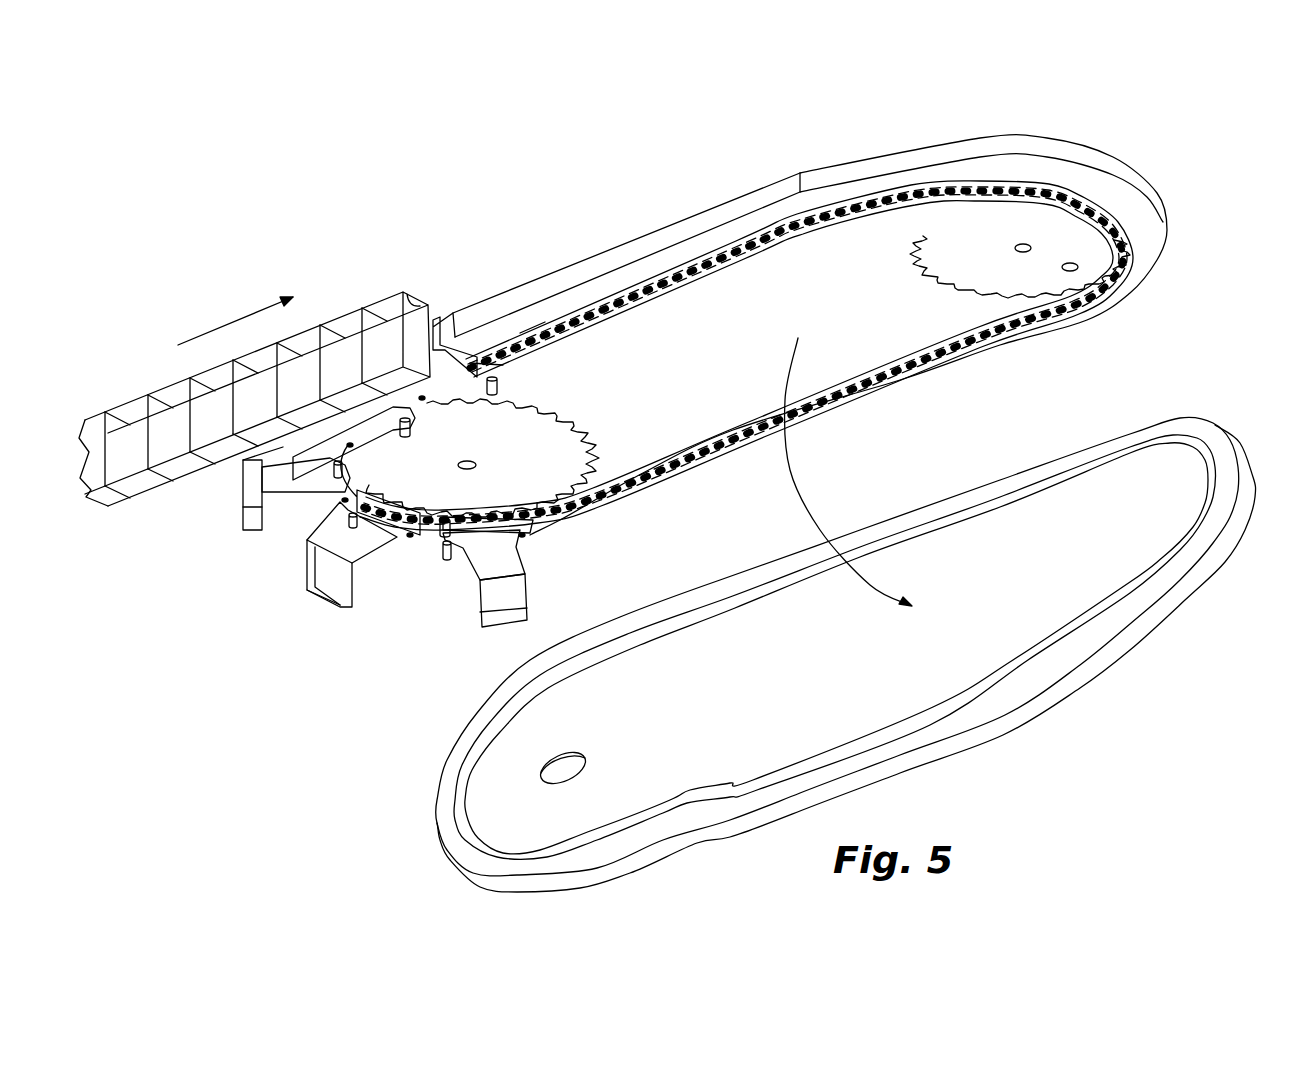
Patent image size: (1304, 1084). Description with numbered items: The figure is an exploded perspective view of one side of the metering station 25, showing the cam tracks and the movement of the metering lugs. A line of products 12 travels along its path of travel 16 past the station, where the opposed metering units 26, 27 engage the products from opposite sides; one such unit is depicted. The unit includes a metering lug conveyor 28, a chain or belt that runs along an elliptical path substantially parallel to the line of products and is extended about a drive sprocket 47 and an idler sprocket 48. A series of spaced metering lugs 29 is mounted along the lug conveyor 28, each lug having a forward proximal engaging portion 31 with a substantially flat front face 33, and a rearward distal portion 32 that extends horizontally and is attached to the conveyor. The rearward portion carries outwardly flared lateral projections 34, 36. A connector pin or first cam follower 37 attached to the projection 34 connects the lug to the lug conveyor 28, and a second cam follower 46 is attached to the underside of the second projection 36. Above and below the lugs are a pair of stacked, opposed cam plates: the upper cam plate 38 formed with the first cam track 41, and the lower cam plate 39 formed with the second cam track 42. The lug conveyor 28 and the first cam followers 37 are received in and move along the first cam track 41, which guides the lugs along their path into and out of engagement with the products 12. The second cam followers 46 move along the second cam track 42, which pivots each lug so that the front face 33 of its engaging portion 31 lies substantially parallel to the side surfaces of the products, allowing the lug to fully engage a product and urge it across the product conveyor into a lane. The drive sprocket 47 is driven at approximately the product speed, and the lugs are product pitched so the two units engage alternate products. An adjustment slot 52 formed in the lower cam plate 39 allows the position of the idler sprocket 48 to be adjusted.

The products 12 is at (337, 330).
The path of travel 16 is at (235, 320).
The metering station 25 is at (563, 237).
The metering unit 26 is at (780, 146).
The metering unit 27 is at (780, 176).
The metering lug conveyor 28 is at (740, 248).
The metering lug 29 is at (397, 544).
The forward proximal engaging portion 31 is at (252, 493).
The rearward distal portion 32 is at (297, 482).
The front face 33 is at (237, 492).
The projection 34 is at (413, 513).
The second projection 36 is at (367, 497).
The first cam follower 37 is at (425, 400).
The upper cam plate 38 is at (648, 367).
The lower cam plate 39 is at (790, 690).
The first cam track 41 is at (537, 327).
The second cam track 42 is at (670, 803).
The second cam follower 46 is at (503, 383).
The drive sprocket 47 is at (953, 257).
The idler sprocket 48 is at (553, 440).
The adjustment slot 52 is at (575, 752).